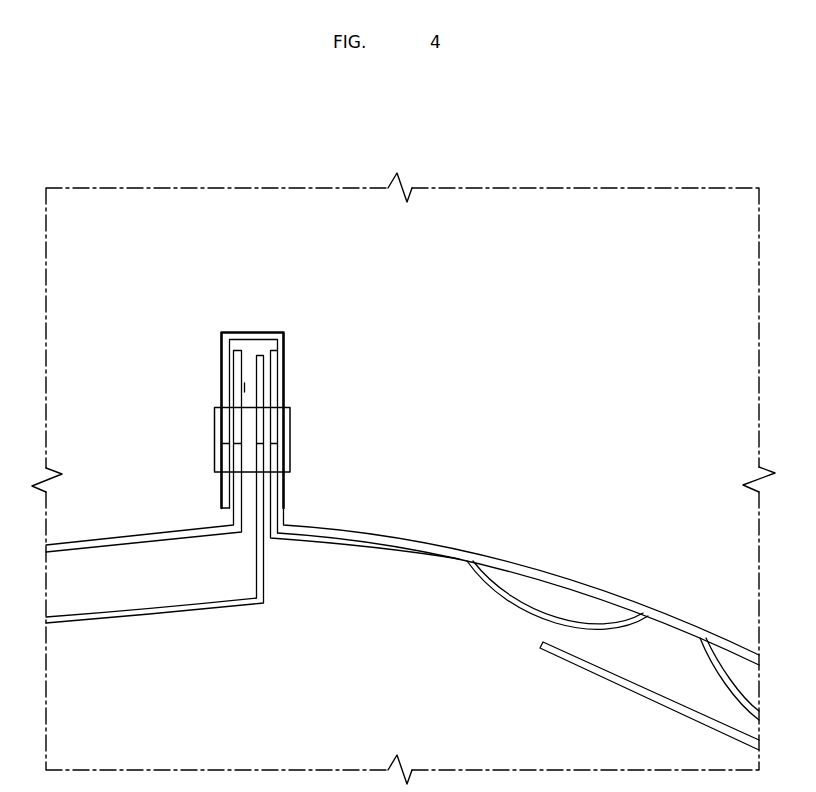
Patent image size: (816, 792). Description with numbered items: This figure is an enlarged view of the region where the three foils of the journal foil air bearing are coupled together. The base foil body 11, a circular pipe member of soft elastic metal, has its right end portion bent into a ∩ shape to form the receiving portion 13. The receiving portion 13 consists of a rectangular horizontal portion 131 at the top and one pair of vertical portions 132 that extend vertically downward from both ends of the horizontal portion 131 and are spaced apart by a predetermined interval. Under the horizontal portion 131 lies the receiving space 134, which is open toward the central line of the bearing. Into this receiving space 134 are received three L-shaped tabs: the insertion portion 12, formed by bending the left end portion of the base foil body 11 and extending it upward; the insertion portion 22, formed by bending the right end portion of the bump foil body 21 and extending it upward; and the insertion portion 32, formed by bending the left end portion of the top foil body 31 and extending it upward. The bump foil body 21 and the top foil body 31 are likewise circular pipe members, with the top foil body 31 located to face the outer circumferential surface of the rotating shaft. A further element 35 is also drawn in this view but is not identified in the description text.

The upper layer 11 is at (432, 543).
The electrode layer 12 is at (233, 492).
The connector 13 is at (272, 322).
The connector housing 131 is at (249, 332).
The connector side walls 132 is at (222, 377).
The connector inner contact 134 is at (244, 389).
The lower layer 21 is at (400, 558).
The wire 22 is at (275, 499).
The intermediate layer 31 is at (127, 603).
The bottom layer 32 is at (268, 585).
The strap 35 is at (550, 652).